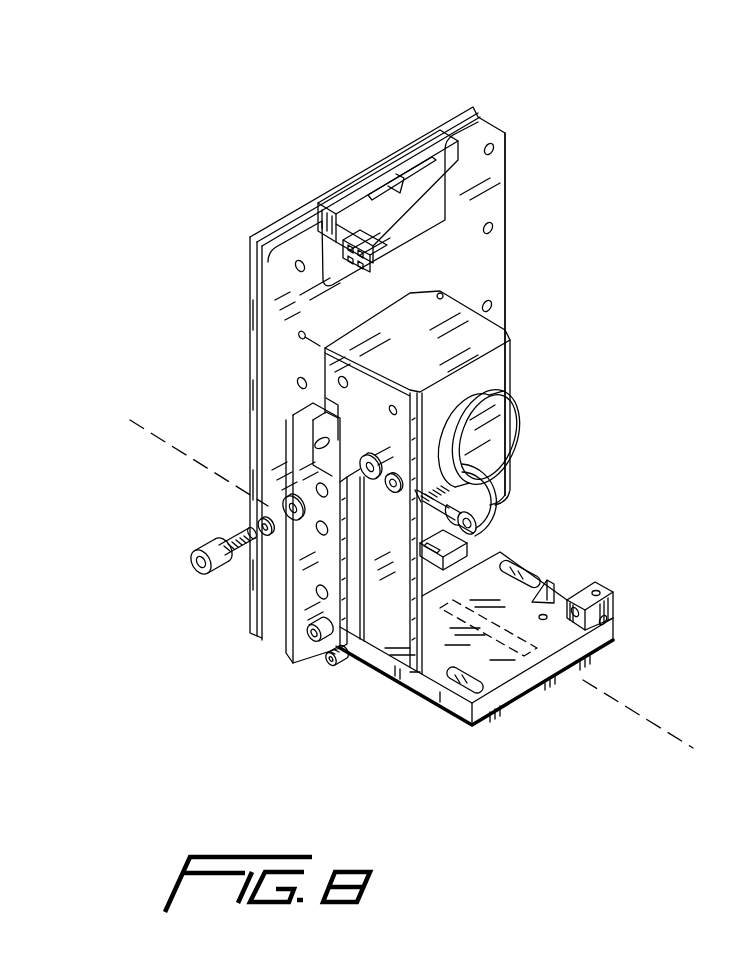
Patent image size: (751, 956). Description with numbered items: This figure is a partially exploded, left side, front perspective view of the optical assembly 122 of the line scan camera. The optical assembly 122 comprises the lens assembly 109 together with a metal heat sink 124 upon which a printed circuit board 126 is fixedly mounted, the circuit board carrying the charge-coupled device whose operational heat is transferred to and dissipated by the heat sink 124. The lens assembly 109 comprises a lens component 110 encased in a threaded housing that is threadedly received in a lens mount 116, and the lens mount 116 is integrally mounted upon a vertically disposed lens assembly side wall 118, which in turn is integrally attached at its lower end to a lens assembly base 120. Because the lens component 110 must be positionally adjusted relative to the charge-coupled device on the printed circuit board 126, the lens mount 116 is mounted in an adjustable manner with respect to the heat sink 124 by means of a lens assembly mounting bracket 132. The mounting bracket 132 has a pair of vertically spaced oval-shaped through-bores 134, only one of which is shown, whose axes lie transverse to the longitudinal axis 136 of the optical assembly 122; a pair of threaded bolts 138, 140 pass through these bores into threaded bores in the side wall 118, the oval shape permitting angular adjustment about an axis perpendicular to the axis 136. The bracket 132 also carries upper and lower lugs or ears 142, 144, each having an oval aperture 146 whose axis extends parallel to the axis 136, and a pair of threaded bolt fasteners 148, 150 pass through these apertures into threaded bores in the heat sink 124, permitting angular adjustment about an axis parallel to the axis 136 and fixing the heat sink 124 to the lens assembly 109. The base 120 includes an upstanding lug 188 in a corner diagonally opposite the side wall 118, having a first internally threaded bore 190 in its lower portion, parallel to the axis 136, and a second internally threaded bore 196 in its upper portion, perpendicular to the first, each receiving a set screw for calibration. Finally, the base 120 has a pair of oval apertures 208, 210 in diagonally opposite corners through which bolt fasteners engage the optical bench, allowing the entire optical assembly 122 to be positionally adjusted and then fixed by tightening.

The lens assembly 109 is at (543, 487).
The lens component 110 is at (493, 423).
The lens mount 116 is at (493, 362).
The lens assembly side wall 118 is at (371, 632).
The lens assembly base 120 is at (507, 698).
The optical assembly 122 is at (571, 233).
The metal heat sink 124 is at (480, 258).
The printed circuit board 126 is at (452, 127).
The lens assembly mounting bracket 132 is at (307, 562).
The oval-shaped apertures or through-bores 134 is at (376, 598).
The longitudinal axis 136 is at (626, 710).
The threaded bolt 138 is at (227, 537).
The threaded bolt 140 is at (302, 644).
The upper lug or ear 142 is at (310, 440).
The lower lug or ear 144 is at (312, 650).
The oval or elliptically shaped aperture or through-bore 146 is at (345, 432).
The threaded bolt fastener 148 is at (503, 513).
The threaded bolt fastener 150 is at (340, 650).
The upstanding lug 188 is at (616, 605).
The first internally threaded bore 190 is at (615, 638).
The second internally threaded bore 196 is at (574, 616).
The oval shaped aperture or throughbore 208 is at (543, 576).
The oval shaped aperture or throughbore 210 is at (472, 689).